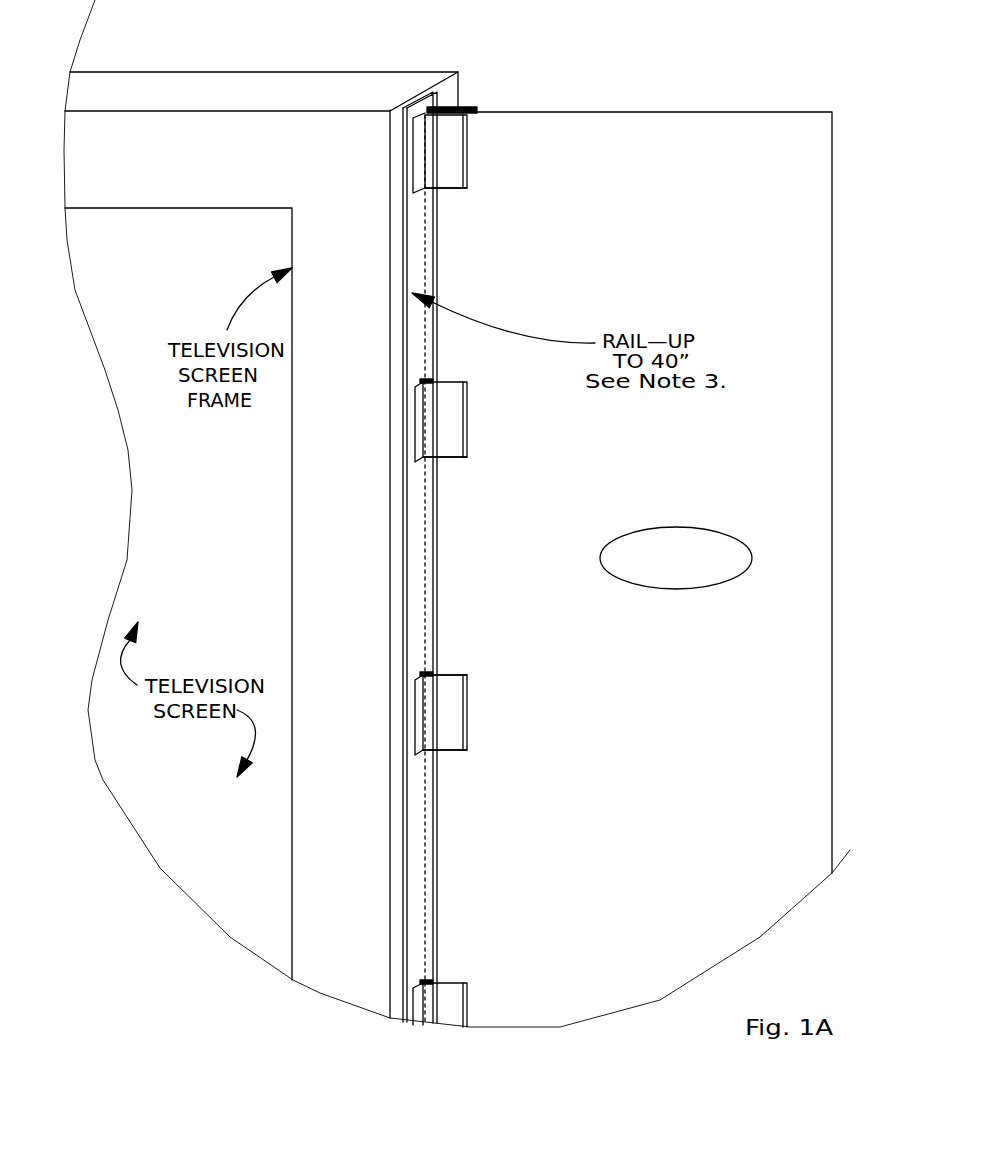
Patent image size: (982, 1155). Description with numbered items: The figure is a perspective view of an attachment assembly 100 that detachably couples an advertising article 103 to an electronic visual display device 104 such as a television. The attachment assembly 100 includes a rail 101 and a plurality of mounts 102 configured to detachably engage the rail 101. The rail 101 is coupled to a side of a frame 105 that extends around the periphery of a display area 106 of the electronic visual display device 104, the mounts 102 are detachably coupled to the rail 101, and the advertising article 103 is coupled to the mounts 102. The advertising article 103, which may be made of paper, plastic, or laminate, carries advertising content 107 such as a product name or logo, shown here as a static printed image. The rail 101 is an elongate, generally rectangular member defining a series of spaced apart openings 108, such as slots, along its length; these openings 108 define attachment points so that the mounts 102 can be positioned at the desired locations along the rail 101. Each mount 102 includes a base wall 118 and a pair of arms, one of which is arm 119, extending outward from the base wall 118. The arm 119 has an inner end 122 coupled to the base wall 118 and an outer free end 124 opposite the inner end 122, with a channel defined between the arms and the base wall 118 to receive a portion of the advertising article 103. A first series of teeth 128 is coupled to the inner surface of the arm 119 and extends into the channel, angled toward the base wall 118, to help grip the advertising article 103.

The attachment assembly 100 is at (487, 93).
The rail 101 is at (403, 265).
The mount 102 is at (461, 139).
The advertising article 103 is at (655, 112).
The electronic visual display device 104 is at (177, 93).
The frame 105 is at (345, 130).
The display area 106 is at (180, 595).
The advertising content 107 is at (680, 527).
The openings 108 is at (430, 540).
The base wall 118 is at (420, 150).
The arm 119 is at (460, 190).
The inner end 122 is at (435, 102).
The outer free end 124 is at (467, 170).
The first series of teeth 128 is at (457, 673).